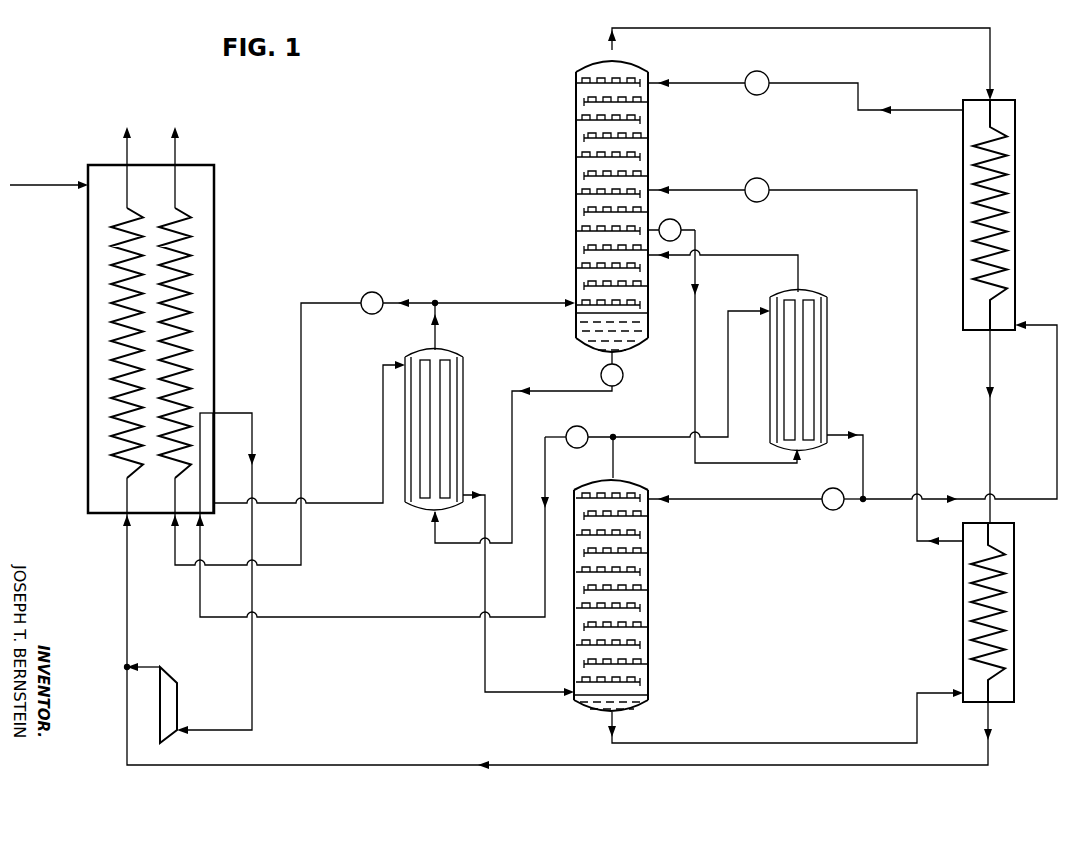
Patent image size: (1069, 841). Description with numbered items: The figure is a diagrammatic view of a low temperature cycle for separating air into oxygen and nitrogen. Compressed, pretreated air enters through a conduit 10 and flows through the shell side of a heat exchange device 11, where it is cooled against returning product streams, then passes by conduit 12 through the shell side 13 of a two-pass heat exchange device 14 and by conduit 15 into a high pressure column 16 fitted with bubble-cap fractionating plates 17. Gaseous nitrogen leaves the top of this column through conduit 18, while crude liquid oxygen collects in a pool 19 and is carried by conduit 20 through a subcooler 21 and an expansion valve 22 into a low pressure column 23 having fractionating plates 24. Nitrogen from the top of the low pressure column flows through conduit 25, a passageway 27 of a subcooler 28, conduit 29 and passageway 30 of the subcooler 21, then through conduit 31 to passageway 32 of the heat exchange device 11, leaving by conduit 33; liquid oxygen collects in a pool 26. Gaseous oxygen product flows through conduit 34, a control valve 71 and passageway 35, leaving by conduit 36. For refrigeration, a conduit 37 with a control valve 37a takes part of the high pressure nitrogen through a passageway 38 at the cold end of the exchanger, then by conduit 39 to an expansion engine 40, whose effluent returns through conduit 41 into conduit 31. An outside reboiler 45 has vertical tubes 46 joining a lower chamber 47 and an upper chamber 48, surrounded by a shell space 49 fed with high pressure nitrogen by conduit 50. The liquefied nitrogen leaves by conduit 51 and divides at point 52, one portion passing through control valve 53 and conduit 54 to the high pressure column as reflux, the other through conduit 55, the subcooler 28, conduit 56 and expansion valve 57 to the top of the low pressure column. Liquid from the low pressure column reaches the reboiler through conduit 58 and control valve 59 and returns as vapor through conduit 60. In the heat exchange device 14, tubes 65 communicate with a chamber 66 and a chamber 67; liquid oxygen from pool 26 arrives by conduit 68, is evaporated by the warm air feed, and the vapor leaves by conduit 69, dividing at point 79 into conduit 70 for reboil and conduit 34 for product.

The conduit 10 is at (44, 185).
The heat exchange device 11 is at (78, 262).
The conduit 12 is at (345, 503).
The shell side 13 is at (463, 390).
The two-pass heat exchange device 14 is at (472, 362).
The conduit 15 is at (485, 600).
The high pressure column 16 is at (648, 604).
The fractionating plates 17 is at (640, 582).
The conduit 18 is at (614, 450).
The pool 19 is at (630, 708).
The conduit 20 is at (868, 190).
The subcooler 21 is at (963, 605).
The expansion valve 22 is at (766, 179).
The low pressure column 23 is at (576, 160).
The fractionating plates 24 is at (576, 212).
The conduit 25 is at (704, 30).
The pool 26 is at (632, 330).
The passageway 27 is at (1000, 178).
The subcooler 28 is at (963, 172).
The conduit 29 is at (990, 413).
The passageway 30 is at (1005, 600).
The conduit 31 is at (127, 545).
The passageway 32 is at (110, 330).
The conduit 33 is at (127, 166).
The conduit 34 is at (173, 565).
The passageway 35 is at (192, 300).
The conduit 36 is at (175, 160).
The conduit 37 is at (200, 575).
The control valve 37a is at (568, 437).
The passageway 38 is at (205, 455).
The conduit 39 is at (252, 413).
The expansion engine 40 is at (177, 683).
The conduit 41 is at (156, 667).
The outside reboiler 45 is at (838, 342).
The tubes 46 is at (824, 322).
The lower chamber 47 is at (800, 452).
The upper chamber 48 is at (800, 300).
The shell space 49 is at (820, 372).
The conduit 50 is at (729, 400).
The conduit 51 is at (867, 442).
The point 52 is at (864, 503).
The control valve 53 is at (824, 505).
The conduit 54 is at (758, 503).
The conduit 55 is at (900, 498).
The conduit 56 is at (838, 95).
The expansion valve 57 is at (766, 72).
The conduit 58 is at (696, 302).
The control valve 59 is at (673, 219).
The conduit 60 is at (764, 255).
The tubes 65 is at (457, 447).
The chamber 66 is at (432, 508).
The chamber 67 is at (442, 360).
The conduit 68 is at (565, 391).
The conduit 69 is at (426, 338).
The conduit 70 is at (500, 300).
The control valve 71 is at (383, 300).
The point 79 is at (435, 300).